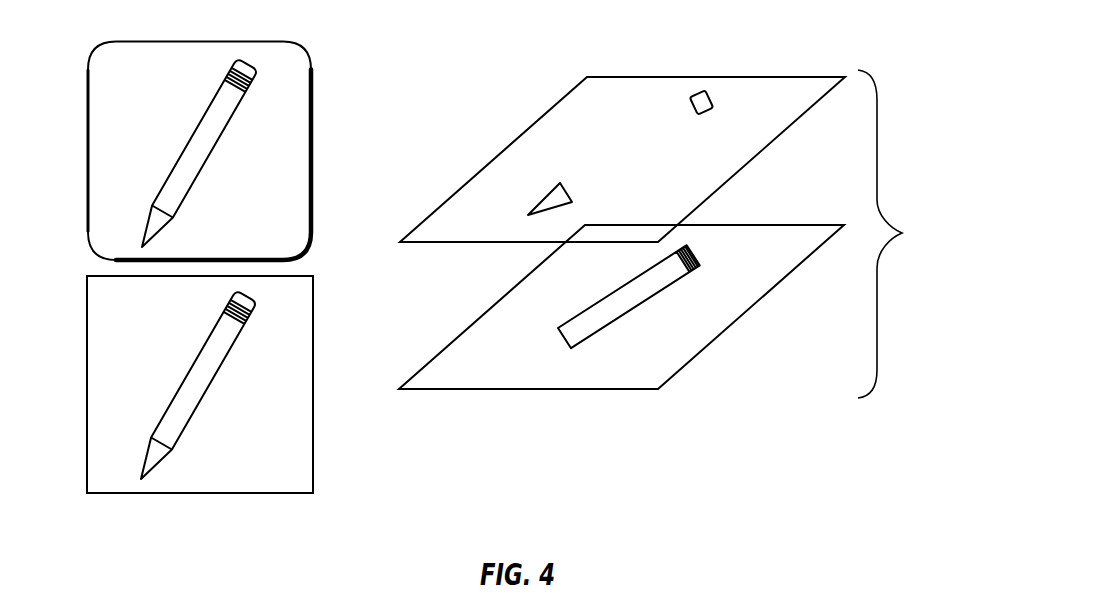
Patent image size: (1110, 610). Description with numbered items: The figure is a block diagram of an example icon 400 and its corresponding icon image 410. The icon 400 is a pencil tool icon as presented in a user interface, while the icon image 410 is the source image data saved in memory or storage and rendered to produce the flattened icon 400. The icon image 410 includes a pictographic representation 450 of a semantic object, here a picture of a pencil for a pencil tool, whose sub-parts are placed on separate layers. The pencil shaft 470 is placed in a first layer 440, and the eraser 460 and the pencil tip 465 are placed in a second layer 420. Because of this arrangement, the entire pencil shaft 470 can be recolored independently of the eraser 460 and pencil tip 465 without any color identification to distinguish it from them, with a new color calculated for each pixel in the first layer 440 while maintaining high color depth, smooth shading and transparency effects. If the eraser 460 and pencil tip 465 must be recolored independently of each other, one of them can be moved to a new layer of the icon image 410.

The icon 400 is at (318, 110).
The icon image 410 is at (316, 350).
The second layer 420 is at (550, 108).
The first layer 440 is at (489, 310).
The pictographic representation 450 is at (213, 165).
The eraser 460 is at (685, 82).
The pencil tip 465 is at (542, 193).
The pencil shaft 470 is at (620, 322).